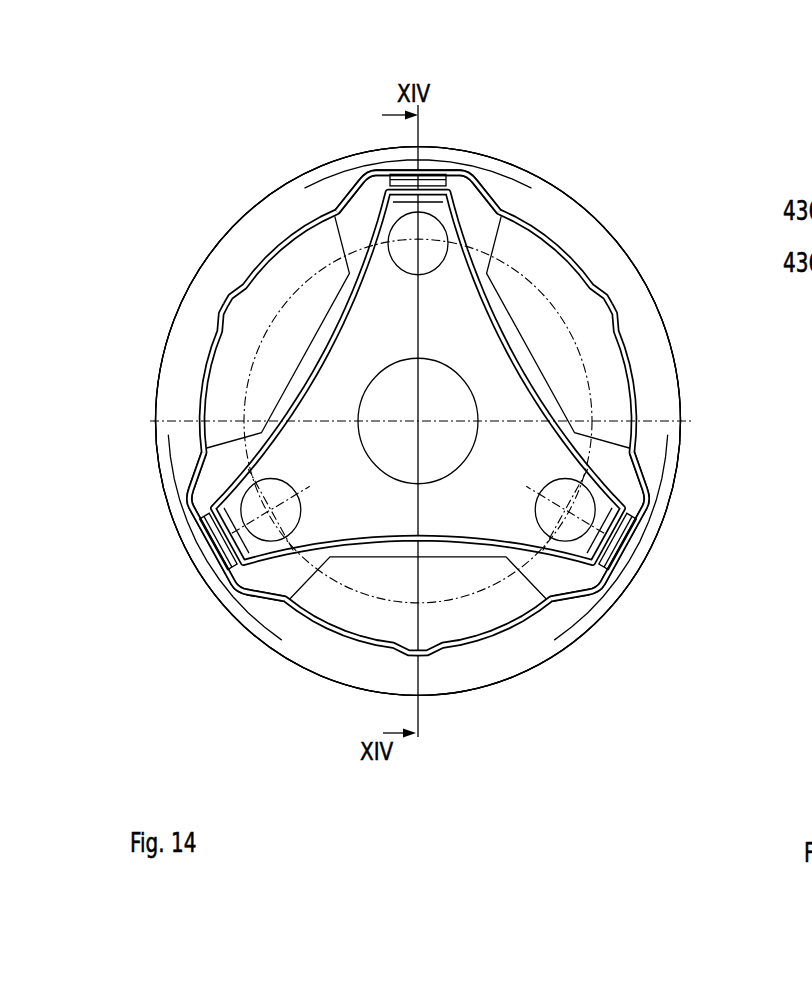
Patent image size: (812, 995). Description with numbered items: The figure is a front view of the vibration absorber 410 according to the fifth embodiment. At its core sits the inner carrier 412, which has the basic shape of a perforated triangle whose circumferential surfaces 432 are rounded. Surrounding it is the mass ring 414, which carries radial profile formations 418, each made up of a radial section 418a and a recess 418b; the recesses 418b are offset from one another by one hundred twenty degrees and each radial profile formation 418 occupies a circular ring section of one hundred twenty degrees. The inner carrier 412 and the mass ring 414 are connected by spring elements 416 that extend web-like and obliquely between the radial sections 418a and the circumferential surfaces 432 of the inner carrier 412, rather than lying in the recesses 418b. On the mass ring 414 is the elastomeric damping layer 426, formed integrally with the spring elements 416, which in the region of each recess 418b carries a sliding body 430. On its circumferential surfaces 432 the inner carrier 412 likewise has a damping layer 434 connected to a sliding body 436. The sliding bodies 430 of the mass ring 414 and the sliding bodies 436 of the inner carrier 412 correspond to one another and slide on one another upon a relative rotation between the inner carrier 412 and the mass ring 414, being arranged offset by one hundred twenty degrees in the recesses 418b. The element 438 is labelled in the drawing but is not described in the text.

The vibration absorber 410 is at (703, 131).
The inner carrier 412 is at (510, 403).
The mass ring 414 is at (250, 233).
The spring elements 416 is at (538, 208).
The radial profile formation 418 is at (613, 270).
The radial section 418a is at (220, 273).
The recess 418b is at (450, 157).
The elastomeric damping layer 426 is at (628, 372).
The sliding body 430 is at (415, 182).
The circumferential surfaces 432 is at (308, 345).
The damping layer 434 is at (680, 520).
The sliding body 436 is at (447, 362).
The bearing pads 438 is at (387, 185).